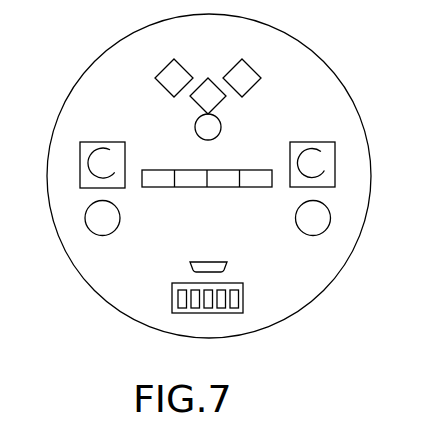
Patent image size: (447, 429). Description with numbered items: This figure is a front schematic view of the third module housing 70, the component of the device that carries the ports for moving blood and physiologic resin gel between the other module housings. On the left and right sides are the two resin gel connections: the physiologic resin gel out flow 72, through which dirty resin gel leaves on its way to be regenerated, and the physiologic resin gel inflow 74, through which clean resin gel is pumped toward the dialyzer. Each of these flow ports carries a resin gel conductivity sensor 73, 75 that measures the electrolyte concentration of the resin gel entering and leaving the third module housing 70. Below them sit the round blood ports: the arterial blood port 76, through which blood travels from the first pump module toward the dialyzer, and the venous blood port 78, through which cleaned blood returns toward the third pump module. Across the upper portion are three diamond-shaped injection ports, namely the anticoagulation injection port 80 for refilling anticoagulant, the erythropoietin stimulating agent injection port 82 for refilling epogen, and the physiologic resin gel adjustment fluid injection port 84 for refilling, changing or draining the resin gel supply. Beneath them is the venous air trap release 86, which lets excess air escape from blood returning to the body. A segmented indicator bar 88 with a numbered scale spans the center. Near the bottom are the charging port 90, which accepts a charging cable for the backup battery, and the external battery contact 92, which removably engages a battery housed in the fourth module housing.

The third module housing 70 is at (108, 67).
The physiologic resin gel out flow 72 is at (80, 152).
The resin gel conductivity sensor 73 is at (88, 163).
The physiologic resin gel inflow 74 is at (330, 150).
The resin gel conductivity sensor 75 is at (325, 173).
The arterial blood port 76 is at (87, 220).
The venous blood port 78 is at (327, 222).
The anticoagulation injection port 80 is at (166, 80).
The erythropoietin stimulating agent injection port 82 is at (251, 80).
The physiologic resin gel adjustment fluid injection port 84 is at (197, 100).
The venous air trap release 86 is at (217, 130).
The level slider scale 88 is at (188, 188).
The charging port 90 is at (190, 263).
The external battery contact 92 is at (237, 283).